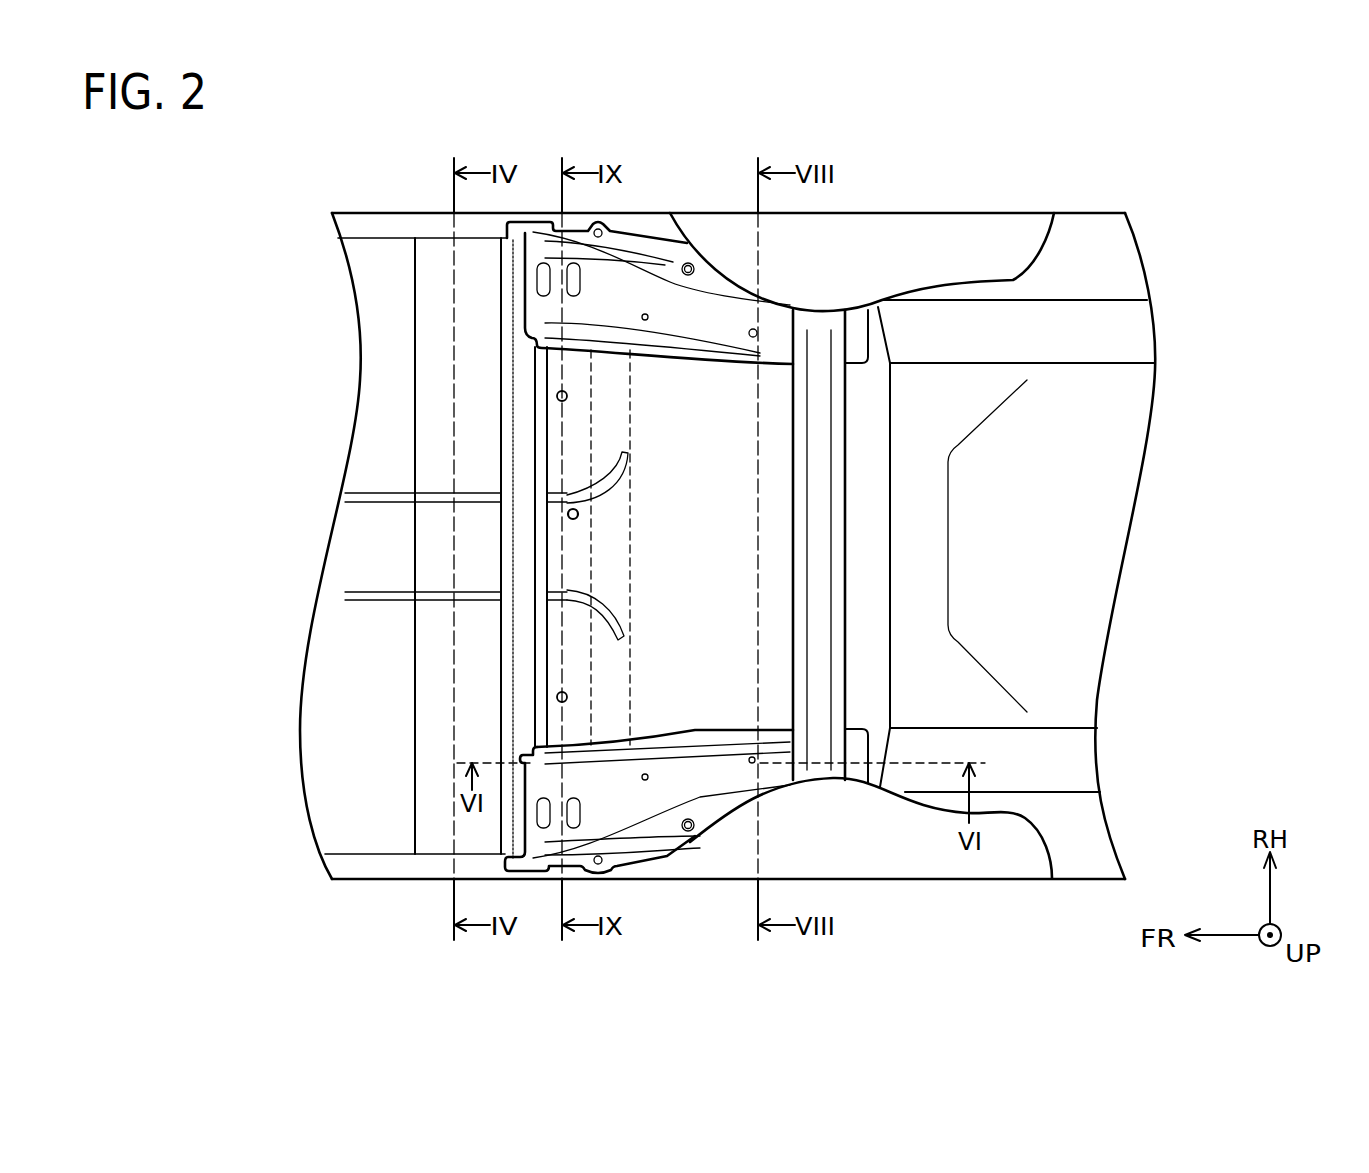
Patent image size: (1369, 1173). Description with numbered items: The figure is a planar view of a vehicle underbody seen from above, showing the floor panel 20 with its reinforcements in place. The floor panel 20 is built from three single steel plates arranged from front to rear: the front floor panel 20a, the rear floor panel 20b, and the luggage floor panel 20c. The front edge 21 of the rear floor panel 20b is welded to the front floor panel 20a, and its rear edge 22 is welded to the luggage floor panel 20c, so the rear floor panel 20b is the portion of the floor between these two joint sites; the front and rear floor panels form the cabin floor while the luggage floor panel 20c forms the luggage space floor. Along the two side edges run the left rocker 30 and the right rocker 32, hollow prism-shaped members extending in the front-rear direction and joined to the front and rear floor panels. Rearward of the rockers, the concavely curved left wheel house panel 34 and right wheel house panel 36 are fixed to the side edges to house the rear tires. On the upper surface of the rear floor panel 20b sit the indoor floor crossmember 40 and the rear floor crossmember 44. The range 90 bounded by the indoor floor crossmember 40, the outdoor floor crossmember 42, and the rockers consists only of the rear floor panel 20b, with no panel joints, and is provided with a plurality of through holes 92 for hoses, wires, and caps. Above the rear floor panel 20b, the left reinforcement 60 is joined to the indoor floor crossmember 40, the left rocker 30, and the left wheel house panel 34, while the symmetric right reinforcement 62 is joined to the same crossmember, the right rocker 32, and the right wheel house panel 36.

The floor panel 20 is at (340, 127).
The front floor panel 20a is at (390, 258).
The rear floor panel 20b is at (442, 257).
The luggage floor panel 20c is at (938, 400).
The front edge 21 is at (415, 360).
The rear edge 22 is at (892, 485).
The left rocker 30 is at (352, 870).
The right rocker 32 is at (348, 227).
The left wheel house panel 34 is at (1017, 860).
The right wheel house panel 36 is at (977, 238).
The indoor floor crossmember 40 is at (527, 690).
The outdoor floor crossmember 42 is at (603, 641).
The rear floor crossmember 44 is at (820, 568).
The left reinforcement 60 is at (512, 734).
The right reinforcement 62 is at (510, 281).
The range 90 is at (612, 554).
The through holes 92 is at (567, 515).